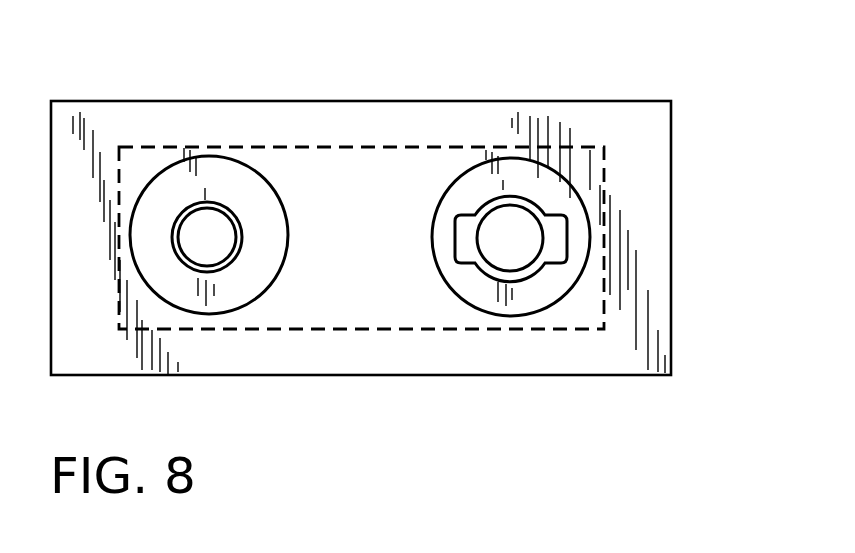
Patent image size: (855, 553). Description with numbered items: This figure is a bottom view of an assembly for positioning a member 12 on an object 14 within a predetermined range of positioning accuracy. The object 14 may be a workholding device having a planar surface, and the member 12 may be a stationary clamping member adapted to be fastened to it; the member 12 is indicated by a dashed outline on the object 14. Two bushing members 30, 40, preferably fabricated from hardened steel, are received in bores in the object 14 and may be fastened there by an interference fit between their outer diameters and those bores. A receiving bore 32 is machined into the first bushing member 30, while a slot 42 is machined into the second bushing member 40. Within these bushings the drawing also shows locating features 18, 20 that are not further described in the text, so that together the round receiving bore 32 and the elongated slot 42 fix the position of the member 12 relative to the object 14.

The member 12 is at (385, 147).
The object 14 is at (379, 253).
The first post 18 is at (224, 254).
The second post 20 is at (528, 255).
The bushing member 30 is at (235, 218).
The receiving bore 32 is at (200, 297).
The bushing member 40 is at (577, 248).
The slot 42 is at (508, 283).